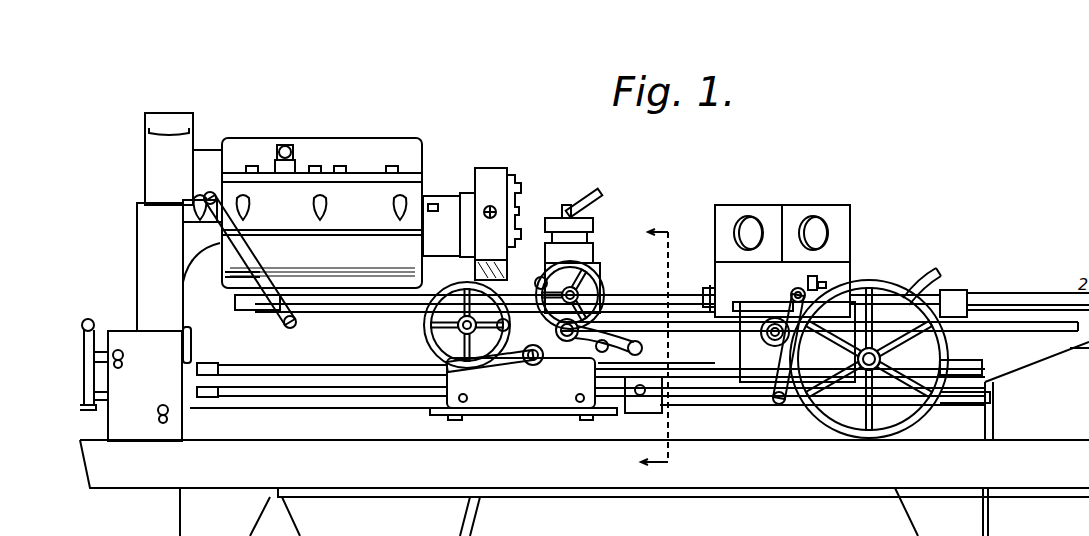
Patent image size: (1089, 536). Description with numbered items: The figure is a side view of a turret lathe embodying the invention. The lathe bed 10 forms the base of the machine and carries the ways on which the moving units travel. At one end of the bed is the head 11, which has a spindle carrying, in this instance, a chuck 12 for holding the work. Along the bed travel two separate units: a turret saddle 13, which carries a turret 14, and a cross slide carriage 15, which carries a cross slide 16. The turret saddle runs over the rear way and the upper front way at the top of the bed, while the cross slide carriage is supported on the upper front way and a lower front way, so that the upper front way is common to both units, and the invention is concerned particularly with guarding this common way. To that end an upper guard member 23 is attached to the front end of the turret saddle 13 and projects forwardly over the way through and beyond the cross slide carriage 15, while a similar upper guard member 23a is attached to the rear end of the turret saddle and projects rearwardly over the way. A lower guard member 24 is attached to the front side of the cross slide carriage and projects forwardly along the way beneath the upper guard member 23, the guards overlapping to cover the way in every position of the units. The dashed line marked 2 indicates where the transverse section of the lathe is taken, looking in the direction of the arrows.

The lathe bed 10 is at (1018, 362).
The head 11 is at (362, 157).
The chuck 12 is at (492, 170).
The turret saddle 13 is at (842, 272).
The turret 14 is at (843, 221).
The cross slide carriage 15 is at (575, 396).
The cross slide 16 is at (596, 282).
The upper guard member 23 is at (623, 308).
The upper guard member 23a is at (1017, 300).
The lower guard member 24 is at (356, 316).
The section line 2— 2 is at (653, 347).